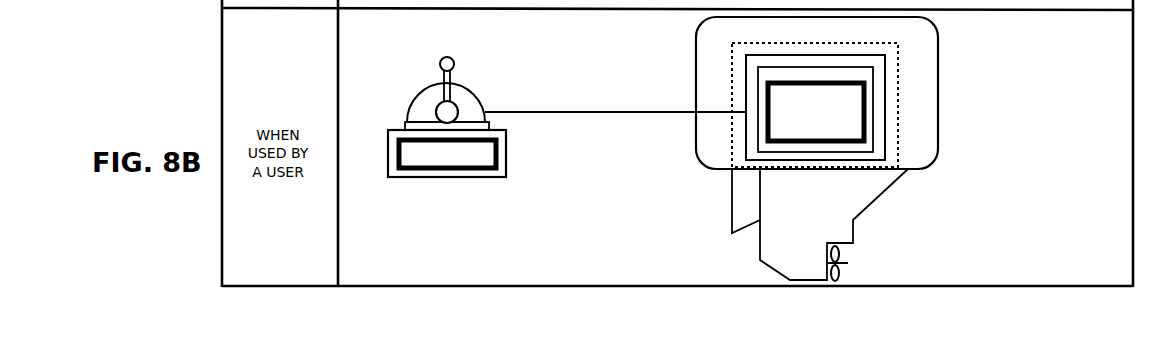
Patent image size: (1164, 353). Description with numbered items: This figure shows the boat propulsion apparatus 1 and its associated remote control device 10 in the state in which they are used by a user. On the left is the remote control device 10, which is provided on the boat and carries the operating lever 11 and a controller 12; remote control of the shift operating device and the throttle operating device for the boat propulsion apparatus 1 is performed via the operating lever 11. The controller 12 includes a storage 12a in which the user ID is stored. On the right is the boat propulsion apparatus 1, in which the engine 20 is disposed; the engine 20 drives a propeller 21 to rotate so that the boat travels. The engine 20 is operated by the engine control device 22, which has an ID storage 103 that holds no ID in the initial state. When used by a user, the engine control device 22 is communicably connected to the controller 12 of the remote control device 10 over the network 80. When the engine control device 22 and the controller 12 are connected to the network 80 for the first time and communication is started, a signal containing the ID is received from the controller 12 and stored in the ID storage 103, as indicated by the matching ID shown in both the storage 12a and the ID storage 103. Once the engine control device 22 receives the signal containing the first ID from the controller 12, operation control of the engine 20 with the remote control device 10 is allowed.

The boat propulsion apparatus 1 is at (846, 93).
The remote control device 10 is at (504, 98).
The operating lever 11 is at (452, 57).
The controller 12 is at (506, 171).
The storage 12a is at (498, 153).
The engine 20 is at (897, 90).
The propeller 21 is at (842, 249).
The engine control device 22 is at (887, 128).
The network 80 is at (630, 110).
The ID storage 103 is at (780, 127).